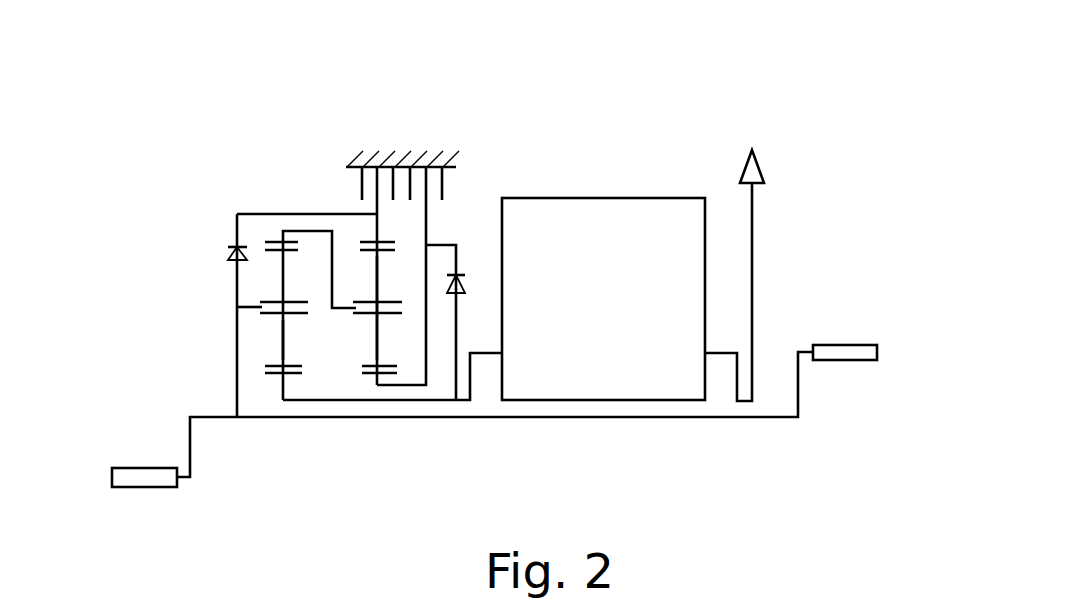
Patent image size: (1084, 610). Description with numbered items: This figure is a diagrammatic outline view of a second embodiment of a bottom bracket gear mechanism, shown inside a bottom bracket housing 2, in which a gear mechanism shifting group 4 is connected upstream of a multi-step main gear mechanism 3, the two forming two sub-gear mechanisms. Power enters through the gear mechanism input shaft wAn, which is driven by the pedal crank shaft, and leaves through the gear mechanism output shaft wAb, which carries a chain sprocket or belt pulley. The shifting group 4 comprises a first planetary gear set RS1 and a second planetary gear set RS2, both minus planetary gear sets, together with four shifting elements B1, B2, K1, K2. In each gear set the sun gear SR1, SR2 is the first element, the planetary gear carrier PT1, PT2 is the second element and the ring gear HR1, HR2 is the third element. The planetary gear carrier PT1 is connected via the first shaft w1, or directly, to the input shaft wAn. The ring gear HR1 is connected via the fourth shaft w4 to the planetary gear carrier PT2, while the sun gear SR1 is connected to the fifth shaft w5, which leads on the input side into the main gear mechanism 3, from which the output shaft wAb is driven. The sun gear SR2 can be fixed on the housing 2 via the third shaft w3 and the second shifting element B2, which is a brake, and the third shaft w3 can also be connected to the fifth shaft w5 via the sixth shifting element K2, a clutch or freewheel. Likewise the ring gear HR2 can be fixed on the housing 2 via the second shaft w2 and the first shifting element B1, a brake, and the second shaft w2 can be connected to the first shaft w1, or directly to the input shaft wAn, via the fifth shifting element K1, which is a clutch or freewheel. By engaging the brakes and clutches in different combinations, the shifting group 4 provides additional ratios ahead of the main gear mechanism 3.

The bottom bracket housing 2 is at (443, 154).
The multi-step main gear mechanism 3 is at (636, 205).
The gear mechanism shifting group 4 is at (306, 201).
The ring gear of the first planetary gear set HR1 is at (273, 238).
The ring gear of the second planetary gear set HR2 is at (367, 237).
The first shifting element B1 is at (377, 162).
The second shifting element B2 is at (426, 162).
The fifth shifting element K1 is at (223, 240).
The sixth shifting element K2 is at (450, 308).
The planetary gear carrier of the first planetary gear set PT1 is at (236, 320).
The planetary gear carrier of the second planetary gear set PT2 is at (344, 314).
The sun gear of the first planetary gear set SR1 is at (265, 374).
The sun gear of the second planetary gear set SR2 is at (390, 377).
The first planetary gear set RS1 is at (290, 384).
The second planetary gear set RS2 is at (383, 352).
The first shaft w1 is at (248, 315).
The second shaft w2 is at (307, 276).
The third shaft w3 is at (401, 276).
The fourth shaft w4 is at (319, 315).
The fifth shaft w5 is at (392, 377).
The gear mechanism input shaft wAn is at (462, 419).
The gear mechanism output shaft wAb is at (794, 346).